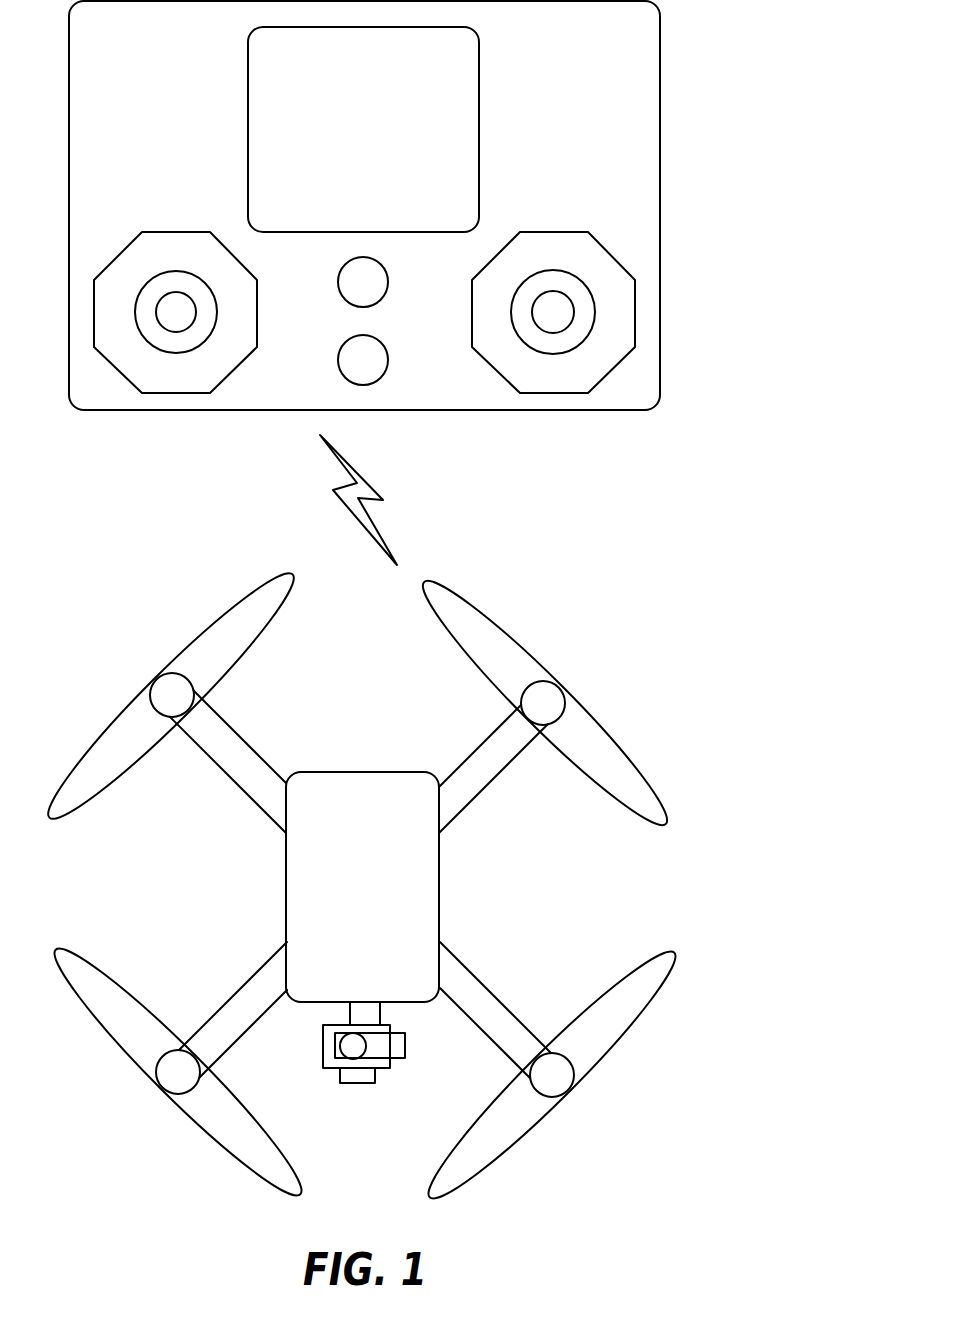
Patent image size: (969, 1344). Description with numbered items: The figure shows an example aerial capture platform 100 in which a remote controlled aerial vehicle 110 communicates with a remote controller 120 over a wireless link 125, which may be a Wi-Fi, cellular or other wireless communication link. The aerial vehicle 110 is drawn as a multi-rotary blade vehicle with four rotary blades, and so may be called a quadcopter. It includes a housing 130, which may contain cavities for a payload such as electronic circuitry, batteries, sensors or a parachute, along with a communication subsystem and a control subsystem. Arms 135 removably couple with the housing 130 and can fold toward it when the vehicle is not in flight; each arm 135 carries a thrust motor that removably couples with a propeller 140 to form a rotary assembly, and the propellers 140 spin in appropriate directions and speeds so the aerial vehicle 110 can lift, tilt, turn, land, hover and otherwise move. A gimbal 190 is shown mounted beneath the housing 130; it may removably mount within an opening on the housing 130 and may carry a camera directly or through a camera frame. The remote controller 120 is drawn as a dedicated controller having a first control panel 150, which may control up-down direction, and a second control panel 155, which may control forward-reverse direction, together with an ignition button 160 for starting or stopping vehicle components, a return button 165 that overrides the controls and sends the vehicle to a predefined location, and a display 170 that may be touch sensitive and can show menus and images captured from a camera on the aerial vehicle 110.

The aerial capture platform 100 is at (376, 607).
The remote controlled aerial vehicle 110 is at (608, 855).
The remote controller 120 is at (660, 205).
The wireless link 125 is at (377, 500).
The housing 130 is at (367, 772).
The arms 135 is at (258, 757).
The propellers 140 is at (102, 733).
The first control panel 150 is at (155, 393).
The second control panel 155 is at (568, 393).
The ignition button 160 is at (386, 293).
The return button 165 is at (386, 371).
The display 170 is at (479, 112).
The gimbal 190 is at (410, 1053).